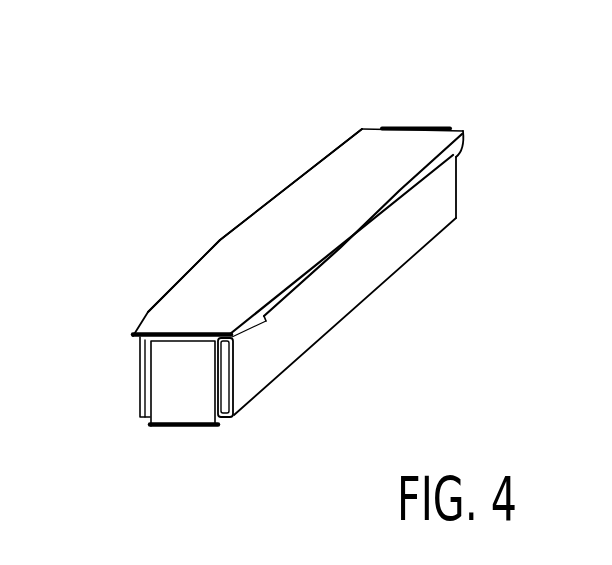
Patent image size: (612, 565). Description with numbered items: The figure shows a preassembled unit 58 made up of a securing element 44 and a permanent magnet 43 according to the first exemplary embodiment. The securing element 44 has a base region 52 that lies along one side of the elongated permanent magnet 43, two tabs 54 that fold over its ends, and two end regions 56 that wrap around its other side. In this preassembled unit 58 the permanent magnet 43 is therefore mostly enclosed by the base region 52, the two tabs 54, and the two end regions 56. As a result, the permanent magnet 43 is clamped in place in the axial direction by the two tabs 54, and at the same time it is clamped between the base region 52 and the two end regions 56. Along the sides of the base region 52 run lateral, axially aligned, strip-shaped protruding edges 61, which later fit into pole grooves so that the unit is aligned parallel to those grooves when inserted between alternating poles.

The permanent magnet 43 is at (383, 271).
The securing element 44 is at (273, 212).
The base region 52 is at (379, 167).
The tabs 54 is at (158, 377).
The end regions 56 is at (219, 424).
The preassembled unit 58 is at (198, 227).
The protruding edges 61 is at (432, 176).